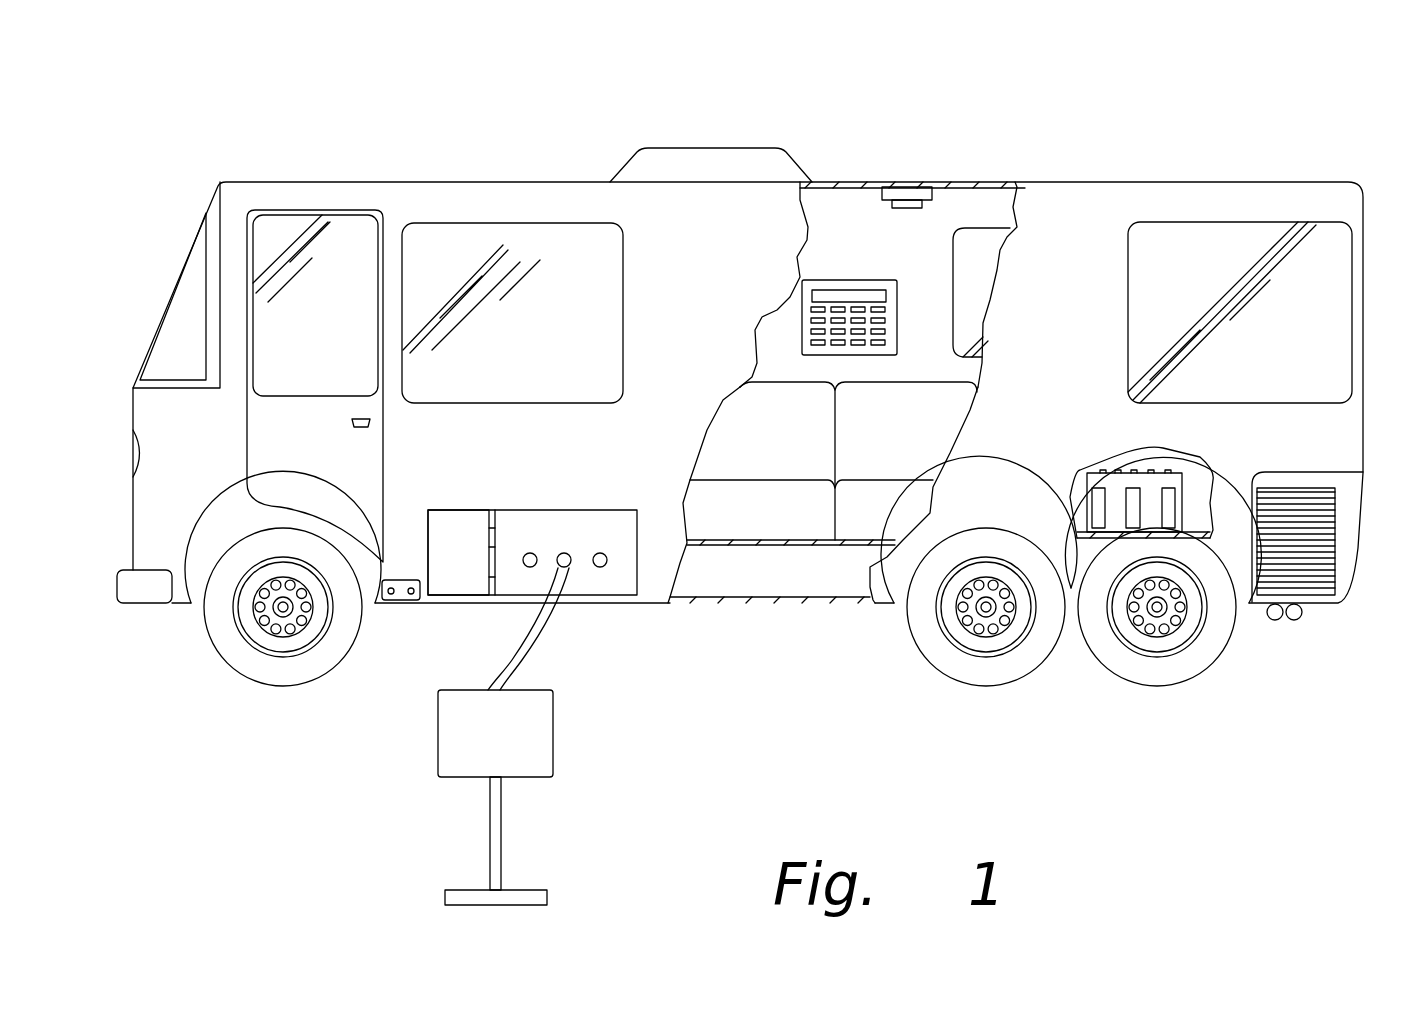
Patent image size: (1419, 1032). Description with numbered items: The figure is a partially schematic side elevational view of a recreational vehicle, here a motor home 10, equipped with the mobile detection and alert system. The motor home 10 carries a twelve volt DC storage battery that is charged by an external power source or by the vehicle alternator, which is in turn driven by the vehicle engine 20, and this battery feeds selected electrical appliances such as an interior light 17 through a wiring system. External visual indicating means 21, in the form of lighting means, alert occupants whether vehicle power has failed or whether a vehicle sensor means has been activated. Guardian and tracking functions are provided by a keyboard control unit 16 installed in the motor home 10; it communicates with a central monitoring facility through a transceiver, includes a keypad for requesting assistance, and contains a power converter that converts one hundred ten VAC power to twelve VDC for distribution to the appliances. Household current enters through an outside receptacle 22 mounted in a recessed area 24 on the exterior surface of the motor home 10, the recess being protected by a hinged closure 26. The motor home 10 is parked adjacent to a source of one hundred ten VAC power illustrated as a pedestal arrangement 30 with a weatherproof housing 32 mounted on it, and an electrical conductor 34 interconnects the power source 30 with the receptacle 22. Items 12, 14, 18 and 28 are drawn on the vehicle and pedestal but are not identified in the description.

The motor home 10 is at (547, 182).
The window 12 is at (383, 303).
The roof air conditioning unit 14 is at (733, 147).
The keyboard control unit 16 is at (800, 337).
The interior light 17 is at (913, 208).
The generator 18 is at (1173, 500).
The vehicle engine 20 is at (1327, 542).
The external visual indicating means 21 is at (412, 580).
The outside receptacle 22 is at (573, 562).
The recessed area 24 is at (567, 517).
The hinged closure 26 is at (462, 528).
The pedestal base 28 is at (465, 890).
The pedestal arrangement 30 is at (503, 827).
The weatherproof housing 32 is at (437, 748).
The electrical conductor 34 is at (523, 643).